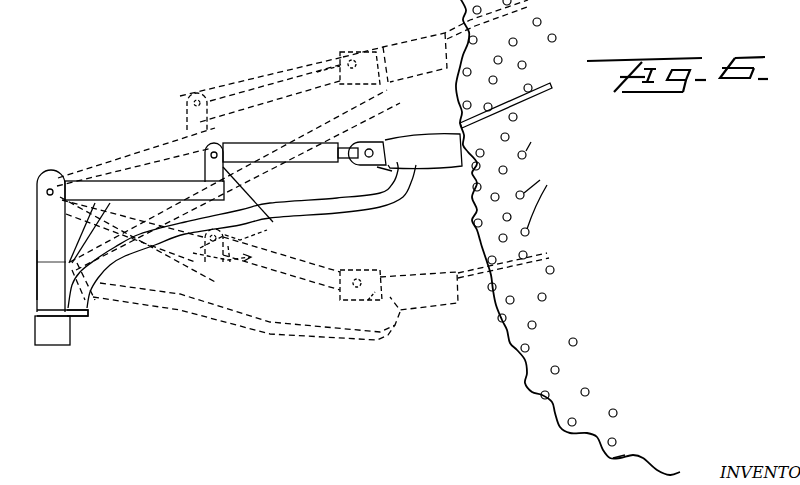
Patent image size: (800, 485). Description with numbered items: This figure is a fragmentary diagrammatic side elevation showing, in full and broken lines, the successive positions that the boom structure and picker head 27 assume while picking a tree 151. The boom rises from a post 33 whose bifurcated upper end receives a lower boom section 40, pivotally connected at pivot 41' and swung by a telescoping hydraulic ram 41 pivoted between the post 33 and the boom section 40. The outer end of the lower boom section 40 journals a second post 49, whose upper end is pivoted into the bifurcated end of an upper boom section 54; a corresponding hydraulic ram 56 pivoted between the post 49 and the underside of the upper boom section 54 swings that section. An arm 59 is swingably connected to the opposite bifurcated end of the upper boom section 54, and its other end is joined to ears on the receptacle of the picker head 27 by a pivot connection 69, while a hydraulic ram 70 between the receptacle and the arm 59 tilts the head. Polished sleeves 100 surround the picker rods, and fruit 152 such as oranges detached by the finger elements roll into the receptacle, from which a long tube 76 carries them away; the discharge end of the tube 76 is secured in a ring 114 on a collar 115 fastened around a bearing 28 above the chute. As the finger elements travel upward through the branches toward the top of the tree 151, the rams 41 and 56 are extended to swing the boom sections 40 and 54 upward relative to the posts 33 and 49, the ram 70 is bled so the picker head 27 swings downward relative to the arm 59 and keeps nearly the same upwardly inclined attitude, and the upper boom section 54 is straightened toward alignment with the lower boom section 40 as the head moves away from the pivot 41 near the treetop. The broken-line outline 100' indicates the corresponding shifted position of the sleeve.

The picker head 27 is at (425, 74).
The bearing 28 is at (61, 345).
The post 33 is at (45, 263).
The lower boom section 40 is at (155, 153).
The hydraulic ram 41 is at (40, 239).
The pivot 41' is at (49, 226).
The post 49 is at (190, 124).
The upper boom section 54 is at (268, 114).
The hydraulic ram 56 is at (229, 262).
The arm 59 is at (347, 148).
The pivot connection 69 is at (369, 150).
The hydraulic ram 70 is at (380, 167).
The tube 76 is at (307, 133).
The sleeve 100 is at (526, 165).
The seal strip retracted position 100' is at (436, 28).
The ring 114 is at (80, 316).
The collar 115 is at (40, 311).
The tree 151 is at (603, 462).
The fruit 152 is at (528, 192).